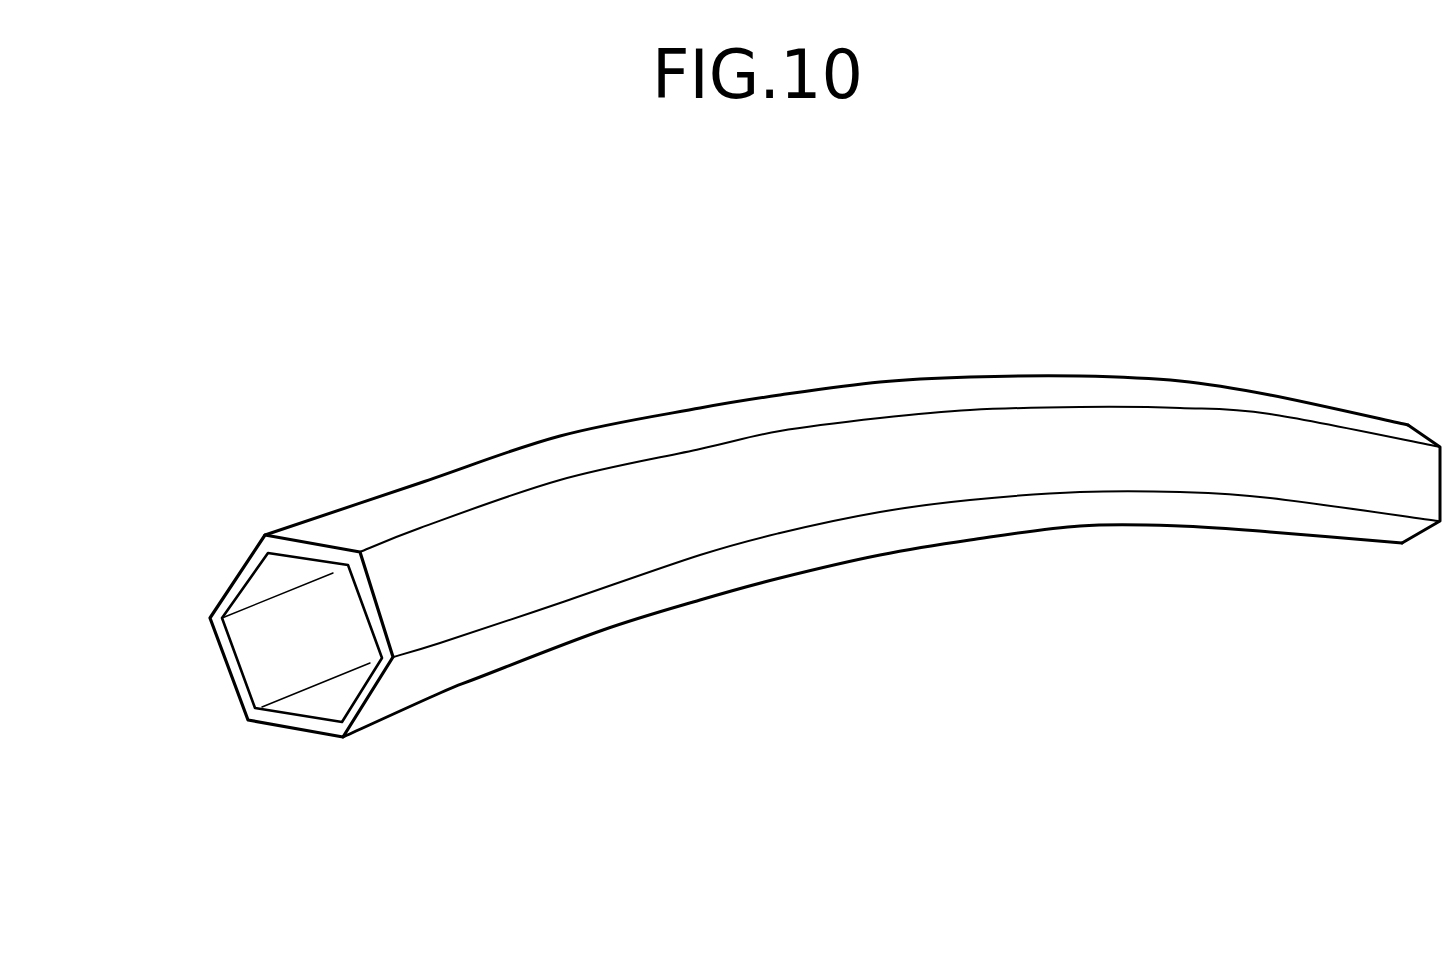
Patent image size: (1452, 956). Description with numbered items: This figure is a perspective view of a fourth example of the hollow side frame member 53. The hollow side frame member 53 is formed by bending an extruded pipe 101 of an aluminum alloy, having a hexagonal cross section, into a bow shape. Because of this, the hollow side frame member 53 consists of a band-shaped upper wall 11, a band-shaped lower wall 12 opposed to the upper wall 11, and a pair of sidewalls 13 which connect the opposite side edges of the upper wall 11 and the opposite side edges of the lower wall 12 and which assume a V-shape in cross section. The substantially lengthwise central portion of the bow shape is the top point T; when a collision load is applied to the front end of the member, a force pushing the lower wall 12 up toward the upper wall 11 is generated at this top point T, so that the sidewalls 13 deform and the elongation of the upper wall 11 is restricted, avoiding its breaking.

The extruded pipe 101 is at (1275, 395).
The hollow side frame member 53 is at (553, 416).
The upper wall 11 is at (458, 477).
The lower wall 12 is at (312, 707).
The sidewalls 13 is at (218, 654).
The top point T is at (940, 372).